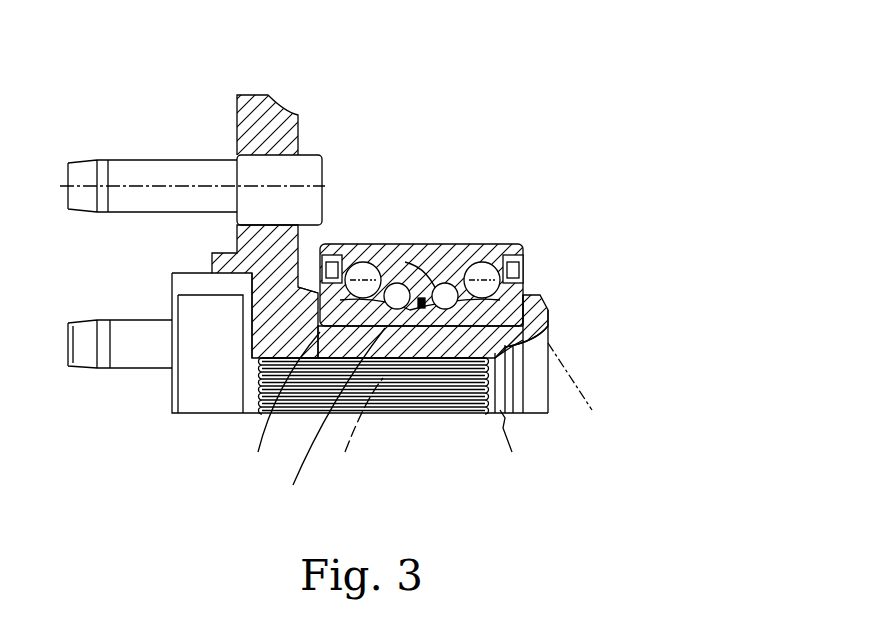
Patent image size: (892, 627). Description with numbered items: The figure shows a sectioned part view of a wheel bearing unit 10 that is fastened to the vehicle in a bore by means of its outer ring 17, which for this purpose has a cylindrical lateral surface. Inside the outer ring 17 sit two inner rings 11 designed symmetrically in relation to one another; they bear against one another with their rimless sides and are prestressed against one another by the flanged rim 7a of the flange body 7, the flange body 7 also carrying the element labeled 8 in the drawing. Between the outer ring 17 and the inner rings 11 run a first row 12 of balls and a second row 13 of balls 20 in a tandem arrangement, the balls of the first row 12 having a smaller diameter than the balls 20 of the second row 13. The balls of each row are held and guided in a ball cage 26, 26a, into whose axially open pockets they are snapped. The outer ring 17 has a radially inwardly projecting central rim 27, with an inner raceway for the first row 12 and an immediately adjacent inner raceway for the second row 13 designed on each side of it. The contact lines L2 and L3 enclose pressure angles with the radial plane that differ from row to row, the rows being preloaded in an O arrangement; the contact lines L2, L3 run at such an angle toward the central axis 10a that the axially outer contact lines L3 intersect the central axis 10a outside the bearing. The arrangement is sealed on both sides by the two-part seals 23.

The flange body 7 is at (172, 273).
The flanged rim 7a is at (540, 307).
The flange 8 is at (277, 115).
The wheel bearing unit 10 is at (504, 108).
The central axis 10a is at (200, 413).
The inner ring 11 is at (320, 292).
The first row 12 is at (455, 412).
The second row 13 is at (526, 336).
The outer ring 17 is at (423, 253).
The balls 20 is at (567, 333).
The seal 23 is at (322, 240).
The ball cage 26 is at (415, 293).
The ball cage 26a is at (350, 267).
The central rim 27 is at (457, 250).
The contact line L2 is at (431, 430).
The contact line L3 is at (600, 383).